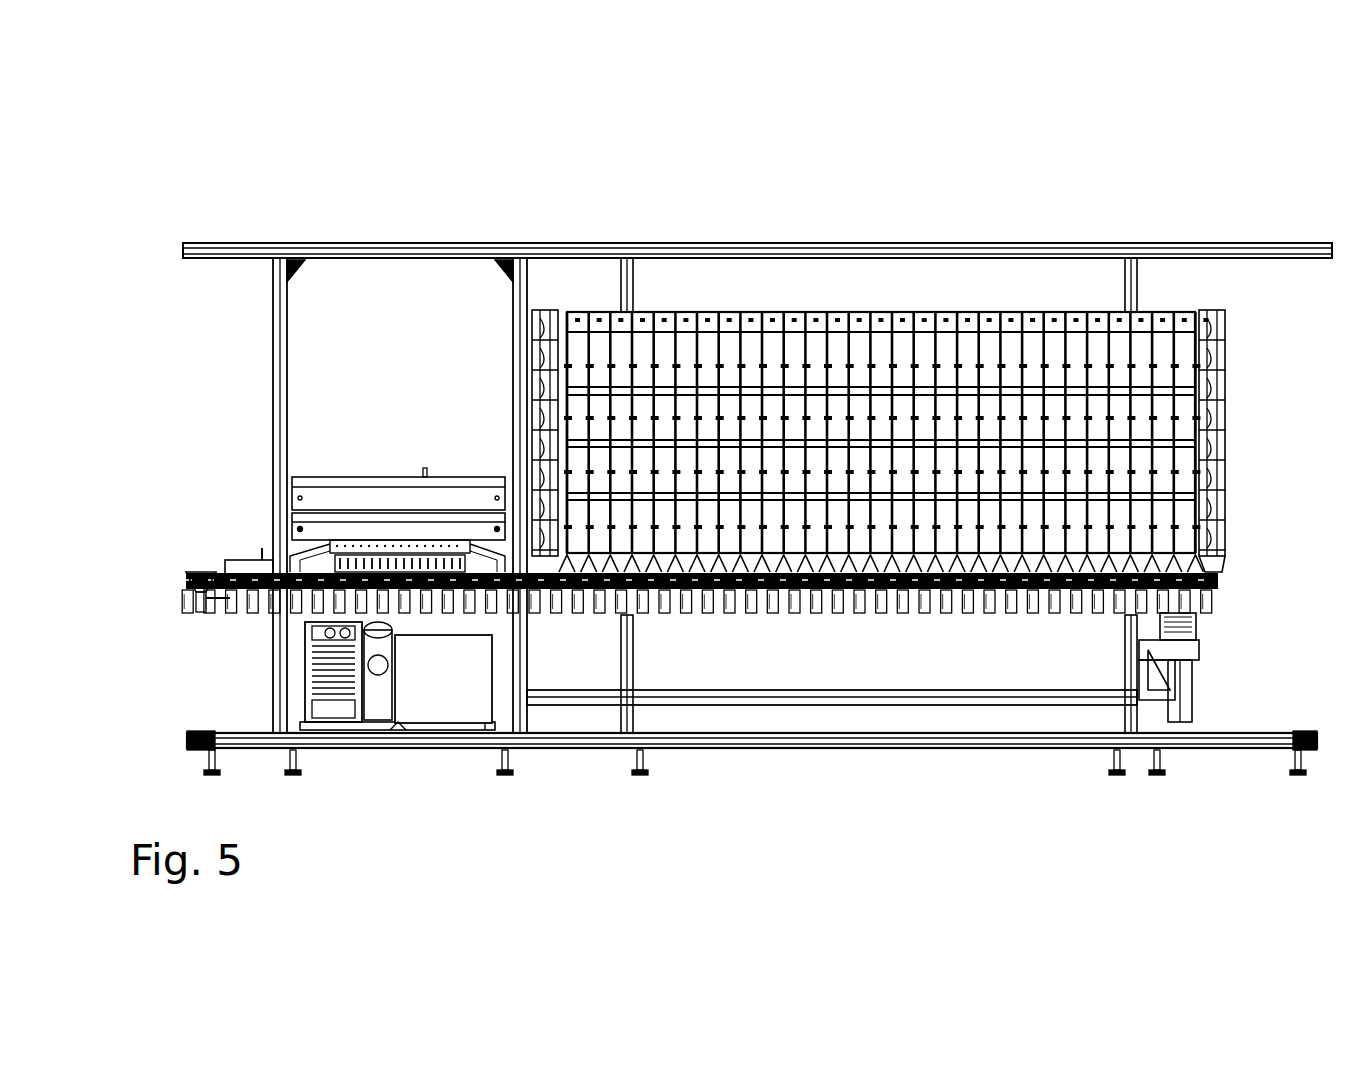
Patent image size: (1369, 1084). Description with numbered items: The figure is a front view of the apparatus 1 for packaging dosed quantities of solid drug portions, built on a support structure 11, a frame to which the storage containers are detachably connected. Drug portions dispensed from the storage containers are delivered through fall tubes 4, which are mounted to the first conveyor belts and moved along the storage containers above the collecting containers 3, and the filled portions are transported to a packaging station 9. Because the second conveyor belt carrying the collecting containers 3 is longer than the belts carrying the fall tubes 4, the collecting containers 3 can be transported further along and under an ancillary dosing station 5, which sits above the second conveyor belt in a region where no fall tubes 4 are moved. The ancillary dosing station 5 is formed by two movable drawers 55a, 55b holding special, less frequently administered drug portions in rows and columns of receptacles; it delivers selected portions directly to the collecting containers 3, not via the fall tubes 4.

The apparatus 1 is at (1206, 215).
The collecting containers 3 is at (236, 600).
The fall tubes 4 is at (835, 355).
The ancillary dosing station 5 is at (249, 460).
The drawer 55a is at (322, 491).
The drawer 55b is at (327, 528).
The packaging station 9 is at (322, 697).
The support structure 11 is at (890, 740).